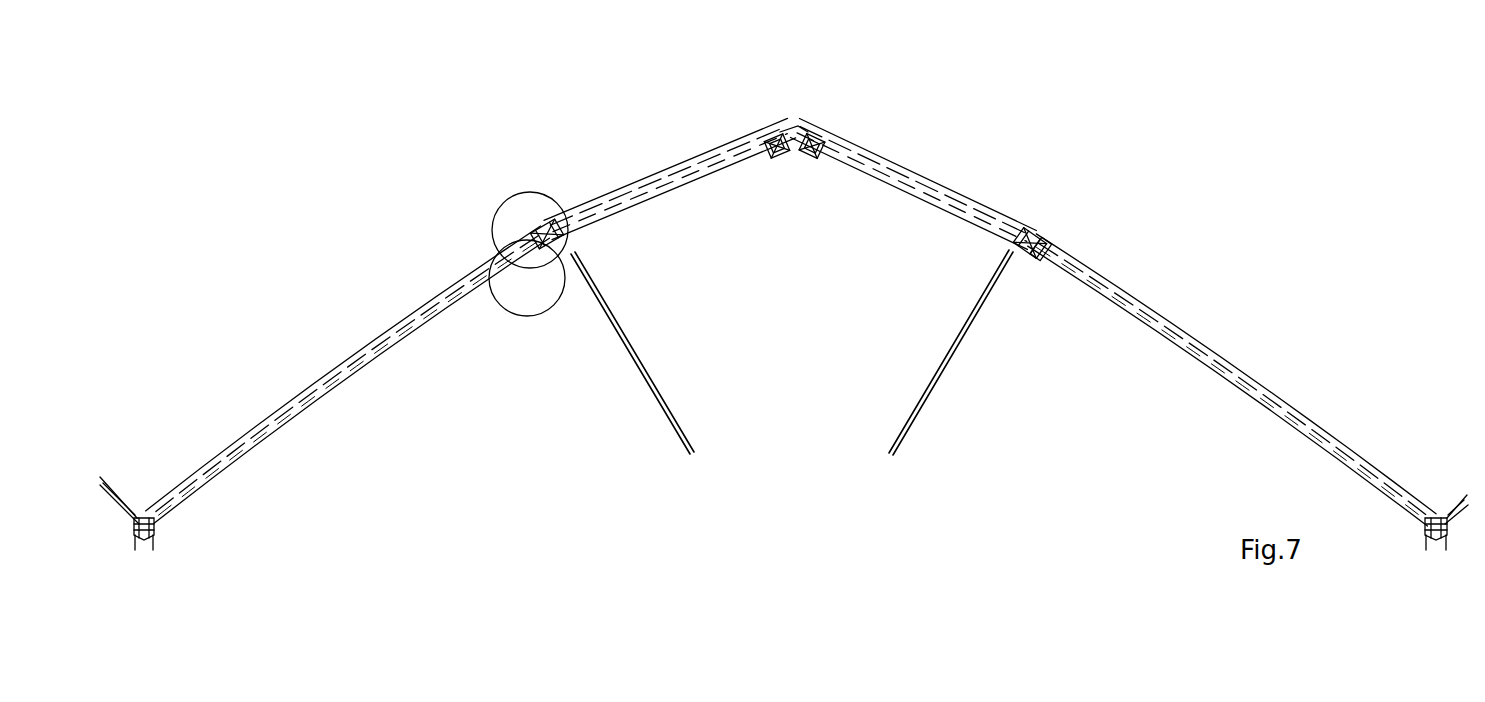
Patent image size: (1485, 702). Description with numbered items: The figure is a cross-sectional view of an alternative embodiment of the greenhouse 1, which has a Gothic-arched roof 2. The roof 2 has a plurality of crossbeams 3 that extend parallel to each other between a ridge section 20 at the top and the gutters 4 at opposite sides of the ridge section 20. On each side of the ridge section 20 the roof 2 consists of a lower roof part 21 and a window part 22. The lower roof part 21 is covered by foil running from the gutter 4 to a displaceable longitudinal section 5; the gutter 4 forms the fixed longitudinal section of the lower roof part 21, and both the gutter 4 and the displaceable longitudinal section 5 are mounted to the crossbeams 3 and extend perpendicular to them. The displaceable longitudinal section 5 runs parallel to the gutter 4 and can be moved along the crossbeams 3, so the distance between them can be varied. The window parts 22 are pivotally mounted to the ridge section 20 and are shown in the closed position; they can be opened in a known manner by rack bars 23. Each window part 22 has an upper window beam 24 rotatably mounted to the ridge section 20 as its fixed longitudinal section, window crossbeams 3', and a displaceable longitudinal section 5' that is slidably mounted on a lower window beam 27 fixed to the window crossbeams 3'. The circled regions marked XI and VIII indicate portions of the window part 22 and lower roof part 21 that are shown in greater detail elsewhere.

The greenhouse 1 is at (1233, 185).
The roof 2 is at (1183, 330).
The crossbeams 3 is at (1233, 379).
The window crossbeams 3' is at (914, 184).
The gutter 4 is at (148, 517).
The displaceable longitudinal section 5 is at (964, 352).
The displaceable longitudinal section of the window part 5' is at (1058, 217).
The ridge section 20 is at (792, 125).
The lower roof part 21 is at (308, 384).
The window part 22 is at (675, 160).
The rack bars 23 is at (657, 388).
The upper window beam 24 is at (806, 125).
The lower window beam 27 is at (1050, 238).
The detail region XI is at (510, 201).
The detail region VIII is at (502, 318).